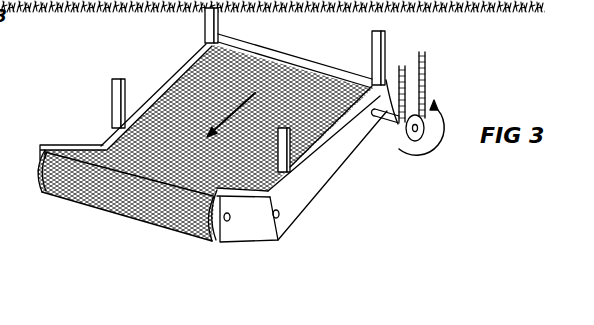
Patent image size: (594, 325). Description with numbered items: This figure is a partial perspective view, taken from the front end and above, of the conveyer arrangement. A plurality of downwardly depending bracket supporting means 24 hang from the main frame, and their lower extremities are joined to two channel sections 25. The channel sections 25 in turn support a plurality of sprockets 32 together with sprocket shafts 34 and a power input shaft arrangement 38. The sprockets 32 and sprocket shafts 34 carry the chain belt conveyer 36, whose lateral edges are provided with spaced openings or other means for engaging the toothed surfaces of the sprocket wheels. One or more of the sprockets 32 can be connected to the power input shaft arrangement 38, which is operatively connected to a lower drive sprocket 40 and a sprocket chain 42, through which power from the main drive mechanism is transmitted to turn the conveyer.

The bracket supporting means 24 is at (218, 12).
The channel sections 25 is at (178, 62).
The sprockets 32 is at (385, 83).
The sprocket shafts 34 is at (231, 220).
The chain belt conveyer 36 is at (150, 222).
The power input shaft arrangement 38 is at (385, 123).
The lower drive sprocket 40 is at (428, 127).
The sprocket chain 42 is at (427, 76).